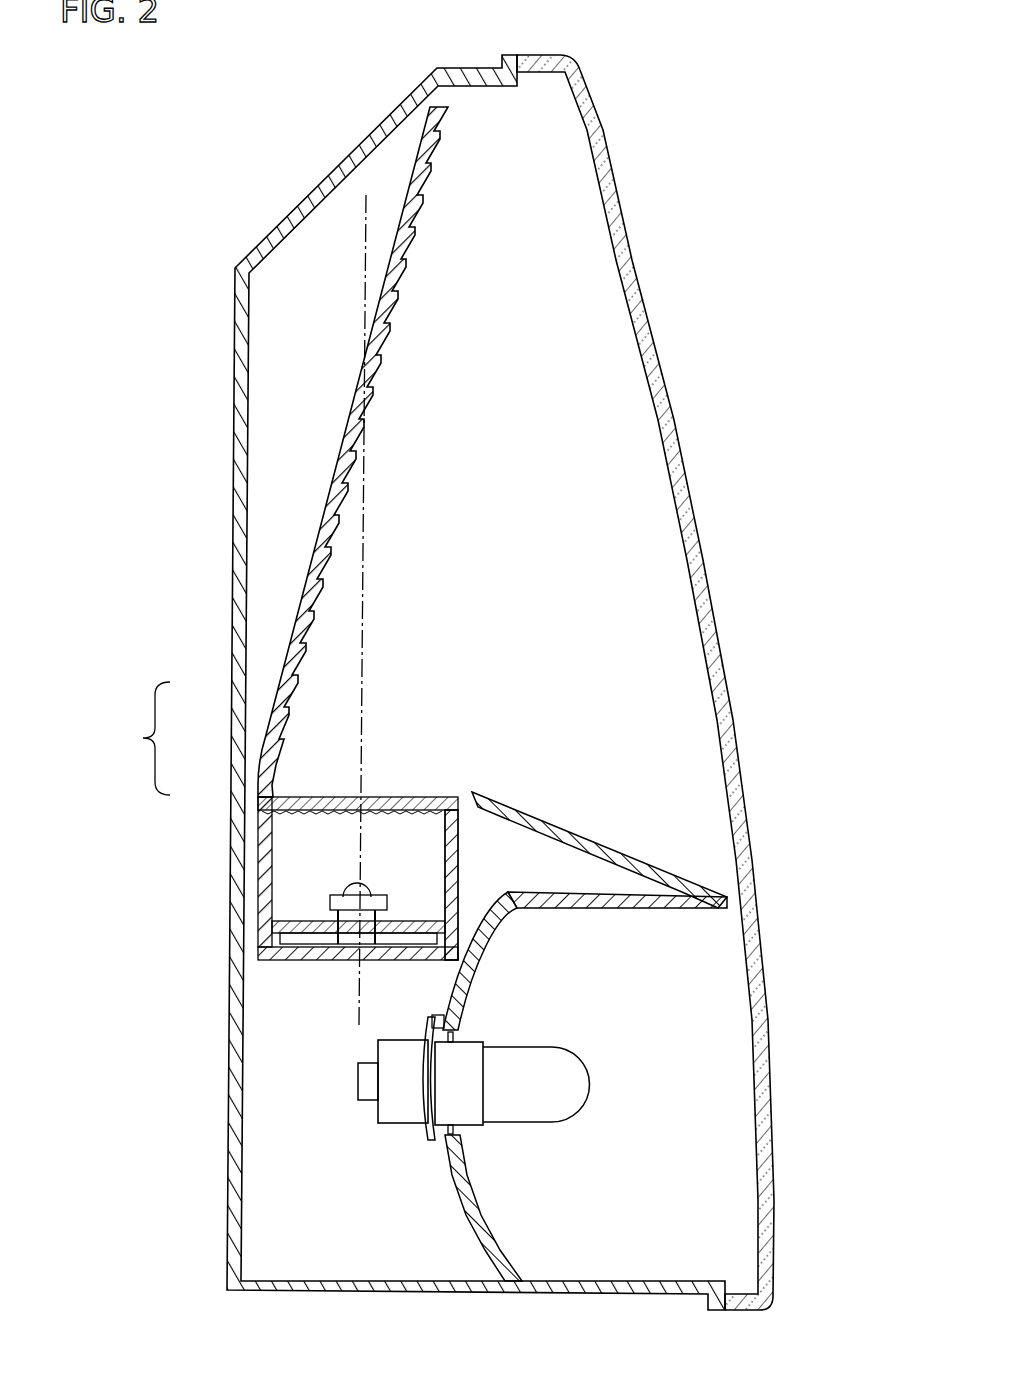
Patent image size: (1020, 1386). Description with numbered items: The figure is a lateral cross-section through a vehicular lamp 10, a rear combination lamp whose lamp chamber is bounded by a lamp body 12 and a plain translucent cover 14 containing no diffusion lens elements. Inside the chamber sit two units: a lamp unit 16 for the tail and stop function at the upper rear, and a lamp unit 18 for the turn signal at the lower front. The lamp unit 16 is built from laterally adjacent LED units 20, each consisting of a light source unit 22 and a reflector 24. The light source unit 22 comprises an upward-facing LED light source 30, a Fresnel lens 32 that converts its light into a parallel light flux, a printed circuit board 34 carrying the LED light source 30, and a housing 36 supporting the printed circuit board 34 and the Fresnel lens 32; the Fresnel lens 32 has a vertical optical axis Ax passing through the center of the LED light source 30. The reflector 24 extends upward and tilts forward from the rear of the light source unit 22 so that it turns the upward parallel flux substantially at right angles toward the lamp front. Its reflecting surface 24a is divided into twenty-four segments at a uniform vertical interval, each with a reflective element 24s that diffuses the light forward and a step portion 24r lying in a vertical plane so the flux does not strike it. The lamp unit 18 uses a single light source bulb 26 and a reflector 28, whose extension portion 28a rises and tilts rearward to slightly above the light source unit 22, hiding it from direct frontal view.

The vehicular lamp 10 is at (705, 182).
The lamp body 12 is at (293, 205).
The translucent cover 14 is at (650, 330).
The lamp unit 16 is at (503, 612).
The lamp unit 18 is at (672, 832).
The LED unit 20 is at (137, 738).
The light source unit 22 is at (247, 840).
The reflector 24 is at (300, 632).
The reflecting surface 24a is at (382, 395).
The reflective element 24s is at (410, 233).
The step portion 24r is at (407, 247).
The optical axis Ax is at (370, 592).
The light source bulb 26 is at (565, 1047).
The reflector 28 is at (432, 1182).
The extension portion 28a is at (560, 830).
The LED light source 30 is at (355, 882).
The Fresnel lens 32 is at (388, 800).
The printed circuit board 34 is at (420, 918).
The housing 36 is at (452, 862).